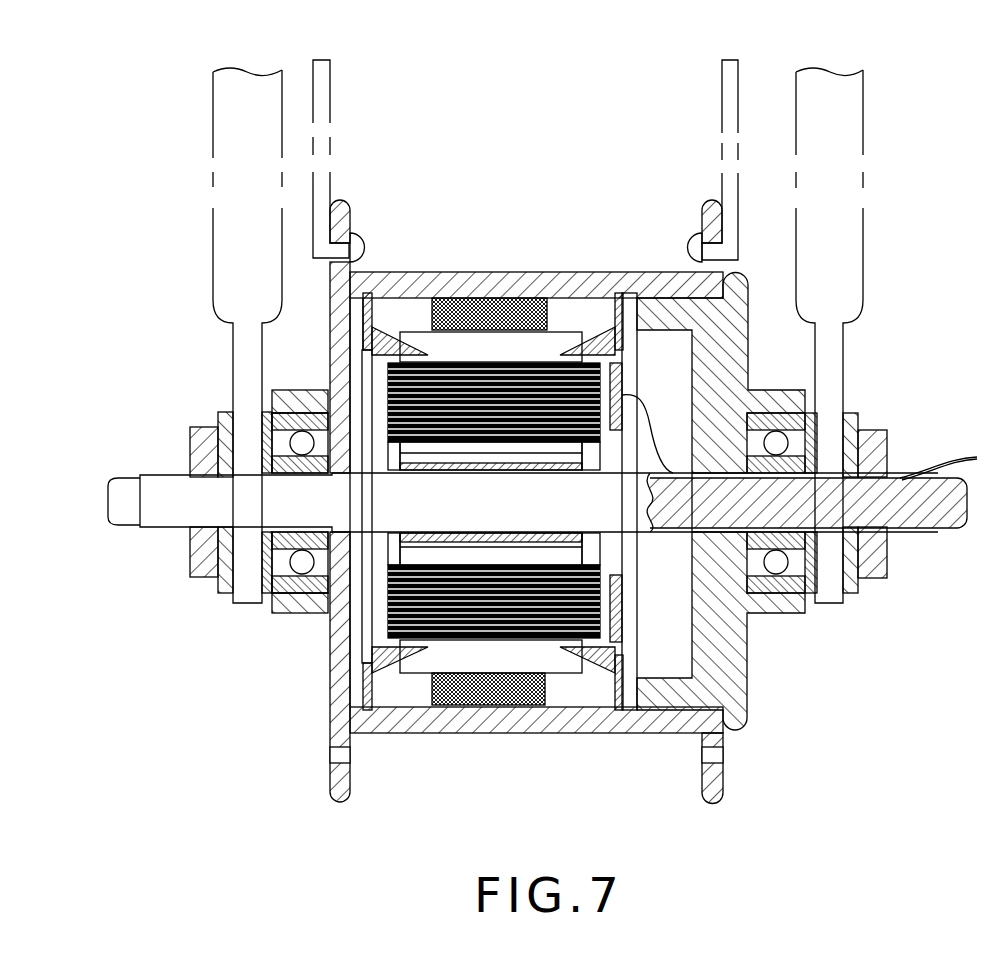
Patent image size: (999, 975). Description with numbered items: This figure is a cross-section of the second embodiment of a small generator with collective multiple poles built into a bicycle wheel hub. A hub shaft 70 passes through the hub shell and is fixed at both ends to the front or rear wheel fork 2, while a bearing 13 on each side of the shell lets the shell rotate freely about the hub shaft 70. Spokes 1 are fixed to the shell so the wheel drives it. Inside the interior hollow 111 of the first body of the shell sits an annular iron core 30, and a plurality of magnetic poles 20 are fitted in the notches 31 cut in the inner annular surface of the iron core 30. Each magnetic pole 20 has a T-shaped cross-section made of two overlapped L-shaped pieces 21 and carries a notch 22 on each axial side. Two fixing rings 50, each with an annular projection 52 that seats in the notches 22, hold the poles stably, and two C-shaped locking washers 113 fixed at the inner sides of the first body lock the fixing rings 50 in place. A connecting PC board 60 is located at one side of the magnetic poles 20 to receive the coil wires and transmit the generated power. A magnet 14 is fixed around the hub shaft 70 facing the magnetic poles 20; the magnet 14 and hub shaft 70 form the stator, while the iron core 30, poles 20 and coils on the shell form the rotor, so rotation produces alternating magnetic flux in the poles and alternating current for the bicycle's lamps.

The spokes 1 is at (722, 120).
The wheel fork 2 is at (866, 182).
The bearing 13 is at (282, 593).
The magnet 14 is at (537, 540).
The magnetic pole 20 is at (488, 491).
The L-shaped piece 21 is at (552, 342).
The notch 22 is at (403, 665).
The annular iron core 30 is at (477, 287).
The notch 31 is at (440, 300).
The fixing ring 50 is at (599, 323).
The annular projection 52 is at (580, 353).
The connecting PC board 60 is at (627, 380).
The hub shaft 70 is at (917, 535).
The interior hollow 111 is at (403, 322).
The C-shaped locking washer 113 is at (363, 333).